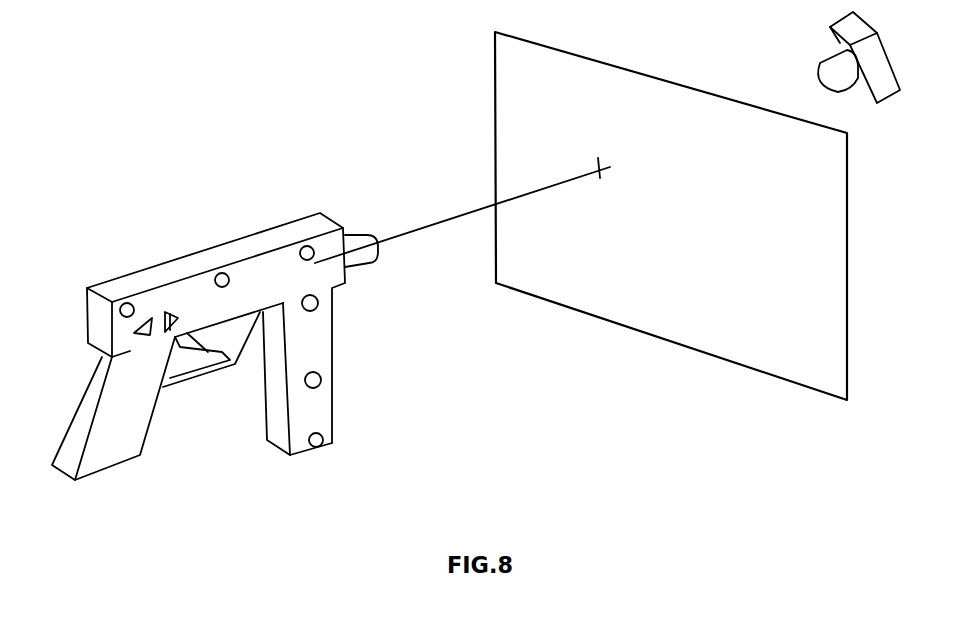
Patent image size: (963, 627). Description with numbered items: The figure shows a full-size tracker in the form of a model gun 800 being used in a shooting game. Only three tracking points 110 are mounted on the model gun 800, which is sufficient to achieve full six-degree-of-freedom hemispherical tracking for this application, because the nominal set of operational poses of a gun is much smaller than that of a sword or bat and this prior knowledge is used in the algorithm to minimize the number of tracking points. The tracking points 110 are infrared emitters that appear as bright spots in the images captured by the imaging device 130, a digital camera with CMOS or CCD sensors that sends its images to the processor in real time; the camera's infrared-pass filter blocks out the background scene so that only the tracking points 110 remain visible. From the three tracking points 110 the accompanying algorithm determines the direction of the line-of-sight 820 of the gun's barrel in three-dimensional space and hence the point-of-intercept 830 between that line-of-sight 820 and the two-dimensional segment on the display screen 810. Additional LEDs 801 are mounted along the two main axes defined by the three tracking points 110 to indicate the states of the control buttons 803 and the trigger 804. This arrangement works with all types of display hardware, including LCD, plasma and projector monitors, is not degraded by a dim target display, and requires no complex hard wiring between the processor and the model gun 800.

The model gun 800 is at (96, 272).
The tracking points 110 is at (322, 435).
The additional LEDs 801 is at (222, 288).
The control buttons 803 is at (170, 333).
The trigger 804 is at (180, 345).
The display screen 810 is at (493, 70).
The line-of-sight 820 is at (458, 217).
The point-of-intercept 830 is at (602, 173).
The imaging device 130 is at (830, 28).